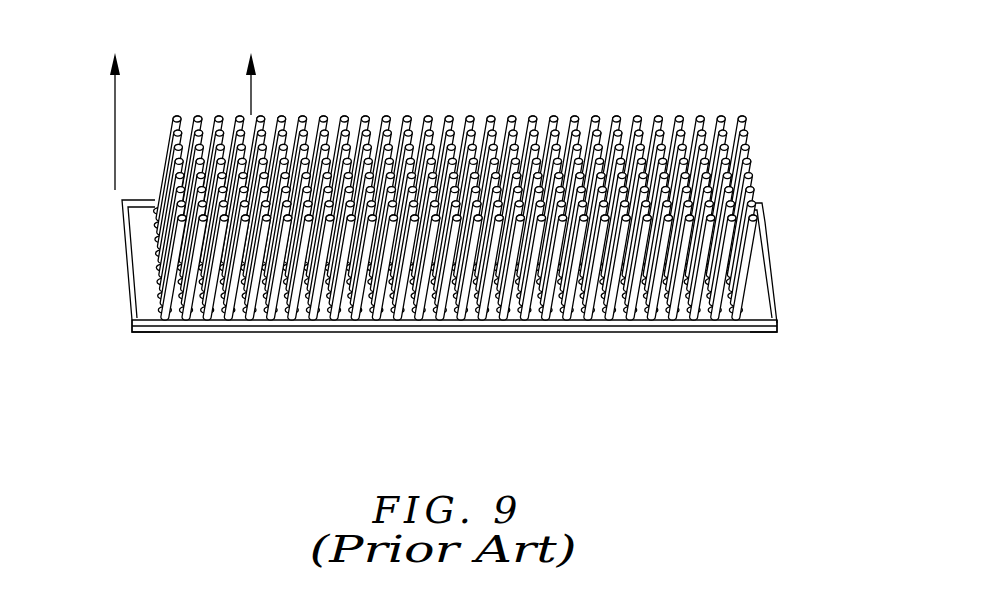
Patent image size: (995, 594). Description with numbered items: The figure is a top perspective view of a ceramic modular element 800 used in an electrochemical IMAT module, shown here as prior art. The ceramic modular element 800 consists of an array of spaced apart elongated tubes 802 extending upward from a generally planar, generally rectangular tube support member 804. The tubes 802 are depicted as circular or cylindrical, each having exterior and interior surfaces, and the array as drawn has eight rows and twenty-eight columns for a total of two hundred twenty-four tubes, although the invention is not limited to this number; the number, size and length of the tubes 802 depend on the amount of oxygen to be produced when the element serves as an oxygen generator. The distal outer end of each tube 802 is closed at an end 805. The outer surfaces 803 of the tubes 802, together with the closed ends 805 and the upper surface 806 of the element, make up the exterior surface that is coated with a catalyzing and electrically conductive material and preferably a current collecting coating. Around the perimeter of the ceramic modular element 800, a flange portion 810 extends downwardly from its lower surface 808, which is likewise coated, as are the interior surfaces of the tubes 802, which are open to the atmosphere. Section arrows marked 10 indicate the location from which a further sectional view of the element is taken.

The ceramic modular element 800 is at (446, 203).
The elongated tubes 802 is at (743, 265).
The outer surfaces of the tubes 803 is at (750, 138).
The tube support member 804 is at (160, 334).
The closed end 805 is at (762, 216).
The upper surface 806 is at (137, 258).
The lower surface 808 is at (349, 333).
The flange portion 810 is at (695, 321).
The section line 10 is at (183, 106).